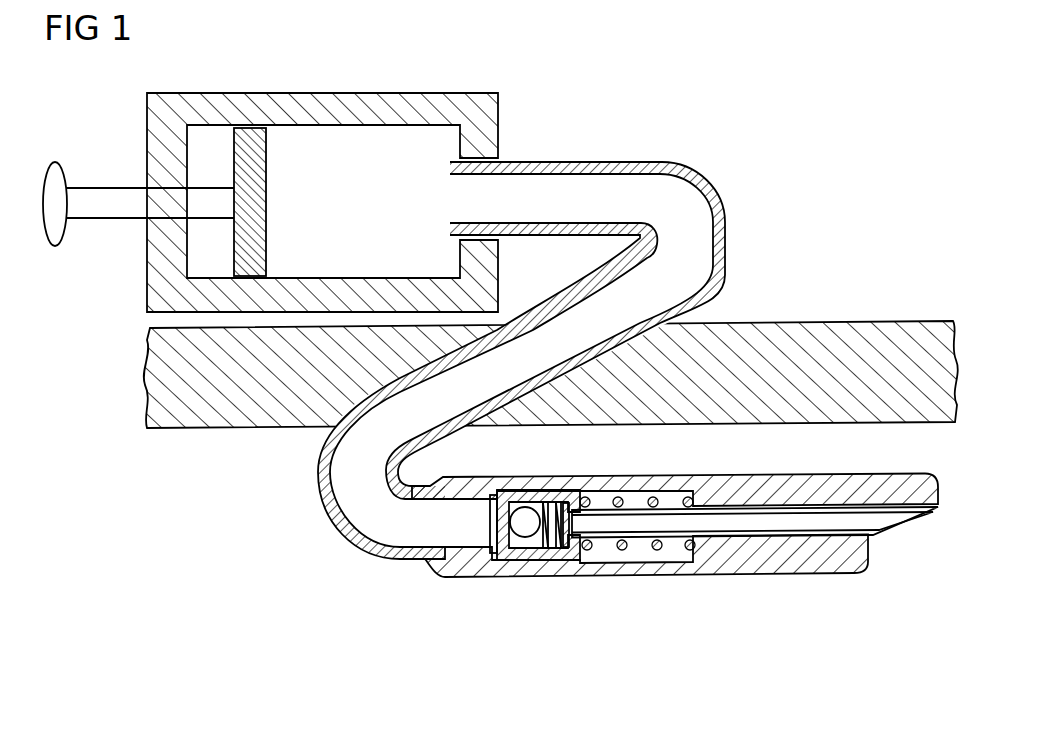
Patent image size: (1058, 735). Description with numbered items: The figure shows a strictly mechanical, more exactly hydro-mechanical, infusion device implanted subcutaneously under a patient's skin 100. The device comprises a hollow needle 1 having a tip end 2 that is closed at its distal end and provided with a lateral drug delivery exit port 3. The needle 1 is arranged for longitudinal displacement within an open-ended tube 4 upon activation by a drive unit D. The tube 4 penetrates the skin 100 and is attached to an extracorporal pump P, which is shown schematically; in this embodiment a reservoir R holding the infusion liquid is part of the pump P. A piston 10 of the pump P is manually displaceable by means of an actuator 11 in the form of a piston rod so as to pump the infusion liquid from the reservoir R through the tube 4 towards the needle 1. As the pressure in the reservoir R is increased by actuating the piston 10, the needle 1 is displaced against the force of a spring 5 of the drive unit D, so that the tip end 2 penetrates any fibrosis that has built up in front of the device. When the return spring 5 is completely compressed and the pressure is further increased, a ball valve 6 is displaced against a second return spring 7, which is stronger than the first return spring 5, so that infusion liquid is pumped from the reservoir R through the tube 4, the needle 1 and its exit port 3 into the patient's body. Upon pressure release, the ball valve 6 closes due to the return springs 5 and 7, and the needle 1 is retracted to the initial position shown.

The needle 1 is at (740, 537).
The tip end 2 is at (907, 523).
The lateral drug delivery exit port 3 is at (900, 492).
The open-ended tube 4 is at (336, 514).
The spring 5 is at (623, 548).
The ball valve 6 is at (518, 526).
The second return spring 7 is at (568, 550).
The piston 10 is at (265, 193).
The actuator 11 is at (115, 192).
The skin 100 is at (845, 333).
The pump P is at (476, 81).
The reservoir R is at (363, 199).
The drive unit D is at (488, 595).